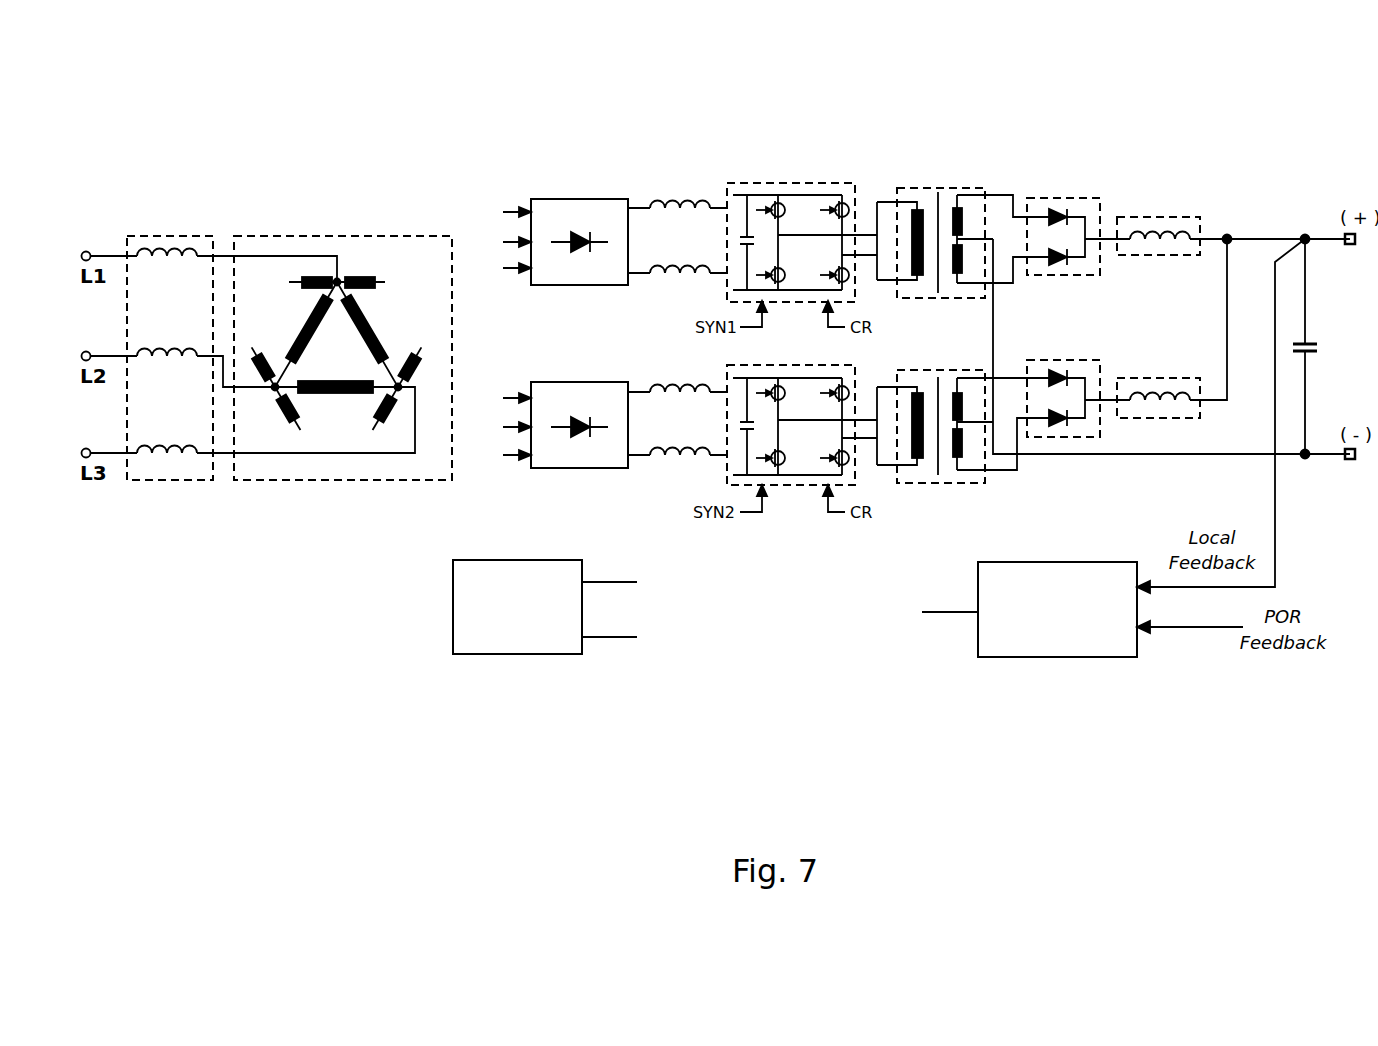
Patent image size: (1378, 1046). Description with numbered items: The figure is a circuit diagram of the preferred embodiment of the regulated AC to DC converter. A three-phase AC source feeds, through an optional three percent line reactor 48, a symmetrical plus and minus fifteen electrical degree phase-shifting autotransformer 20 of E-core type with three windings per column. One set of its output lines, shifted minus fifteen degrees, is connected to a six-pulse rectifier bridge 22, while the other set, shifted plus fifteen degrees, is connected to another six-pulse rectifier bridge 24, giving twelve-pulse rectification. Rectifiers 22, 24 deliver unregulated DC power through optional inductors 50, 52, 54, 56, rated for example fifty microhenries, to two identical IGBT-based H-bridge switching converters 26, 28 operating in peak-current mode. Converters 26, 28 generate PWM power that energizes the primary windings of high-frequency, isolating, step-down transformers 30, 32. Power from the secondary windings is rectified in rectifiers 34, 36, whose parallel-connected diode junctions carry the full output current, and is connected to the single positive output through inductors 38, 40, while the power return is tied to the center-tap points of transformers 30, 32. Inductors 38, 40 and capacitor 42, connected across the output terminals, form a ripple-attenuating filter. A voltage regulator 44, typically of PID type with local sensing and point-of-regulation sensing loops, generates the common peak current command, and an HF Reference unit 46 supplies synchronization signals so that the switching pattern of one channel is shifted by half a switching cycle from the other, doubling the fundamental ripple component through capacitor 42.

The phase-shifting autotransformer 20 is at (340, 236).
The 6-pulse rectifier bridge 22 is at (577, 199).
The 6-pulse rectifier bridge 24 is at (575, 382).
The switching converter 26 is at (790, 183).
The switching converter 28 is at (794, 488).
The high-frequency isolating step-down transformer 30 is at (942, 188).
The high-frequency isolating step-down transformer 32 is at (938, 371).
The rectifier 34 is at (1064, 198).
The rectifier 36 is at (1060, 361).
The inductor 38 is at (1156, 217).
The inductor 40 is at (1155, 378).
The output capacitor 42 is at (1310, 344).
The voltage regulator 44 is at (1058, 562).
The HF Reference unit 46 is at (516, 560).
The line reactor 48 is at (165, 236).
The inductor 50 is at (671, 197).
The inductor 52 is at (671, 384).
The inductor 54 is at (669, 268).
The inductor 56 is at (666, 449).